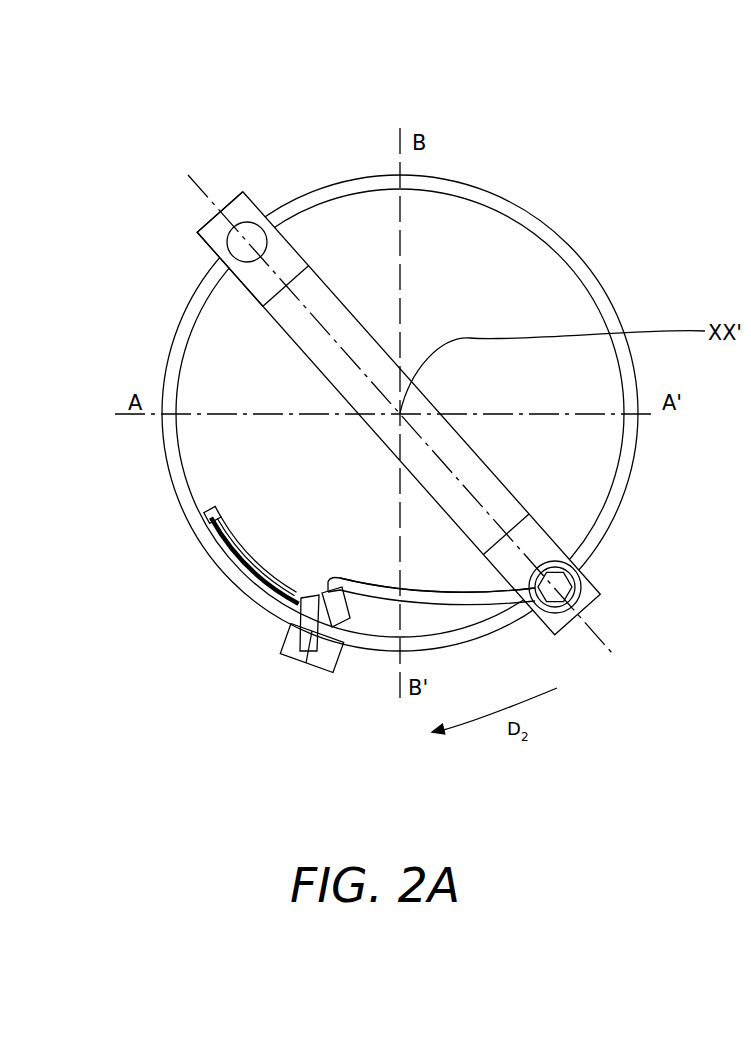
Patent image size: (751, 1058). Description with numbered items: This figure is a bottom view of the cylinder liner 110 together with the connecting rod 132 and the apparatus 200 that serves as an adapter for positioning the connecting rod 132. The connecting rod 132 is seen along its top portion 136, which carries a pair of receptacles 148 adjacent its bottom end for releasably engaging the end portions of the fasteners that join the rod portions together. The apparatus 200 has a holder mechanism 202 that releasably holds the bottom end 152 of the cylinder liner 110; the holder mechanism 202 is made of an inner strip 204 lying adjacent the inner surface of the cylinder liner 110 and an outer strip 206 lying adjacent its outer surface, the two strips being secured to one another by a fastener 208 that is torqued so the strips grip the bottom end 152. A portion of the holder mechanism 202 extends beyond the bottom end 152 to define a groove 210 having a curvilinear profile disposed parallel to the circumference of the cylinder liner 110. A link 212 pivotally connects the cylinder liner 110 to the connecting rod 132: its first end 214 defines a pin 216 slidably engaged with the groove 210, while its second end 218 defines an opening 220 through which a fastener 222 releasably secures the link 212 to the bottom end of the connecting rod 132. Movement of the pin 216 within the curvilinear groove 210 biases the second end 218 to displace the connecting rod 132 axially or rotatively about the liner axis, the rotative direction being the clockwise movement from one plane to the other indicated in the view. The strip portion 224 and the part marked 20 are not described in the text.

The cylinder liner 110 is at (400, 402).
The bottom end of the cylinder liner 152 is at (568, 257).
The connecting rod 132 is at (300, 223).
The top portion of the connecting rod 136 is at (230, 249).
The receptacles 148 is at (227, 241).
The opening 220 is at (576, 558).
The second end of the link 218 is at (580, 594).
The fastener 222 is at (556, 600).
The groove 210 is at (218, 522).
The pin 216 is at (315, 586).
The inner strip 204 is at (199, 511).
The band loop 224 is at (373, 598).
The link 212 is at (420, 590).
The apparatus 200 is at (245, 650).
The holder mechanism 202 is at (283, 665).
The outer strip 206 is at (337, 668).
The fastener 208 is at (290, 630).
The first end of the link 214 is at (335, 568).
The device 20 is at (742, 729).